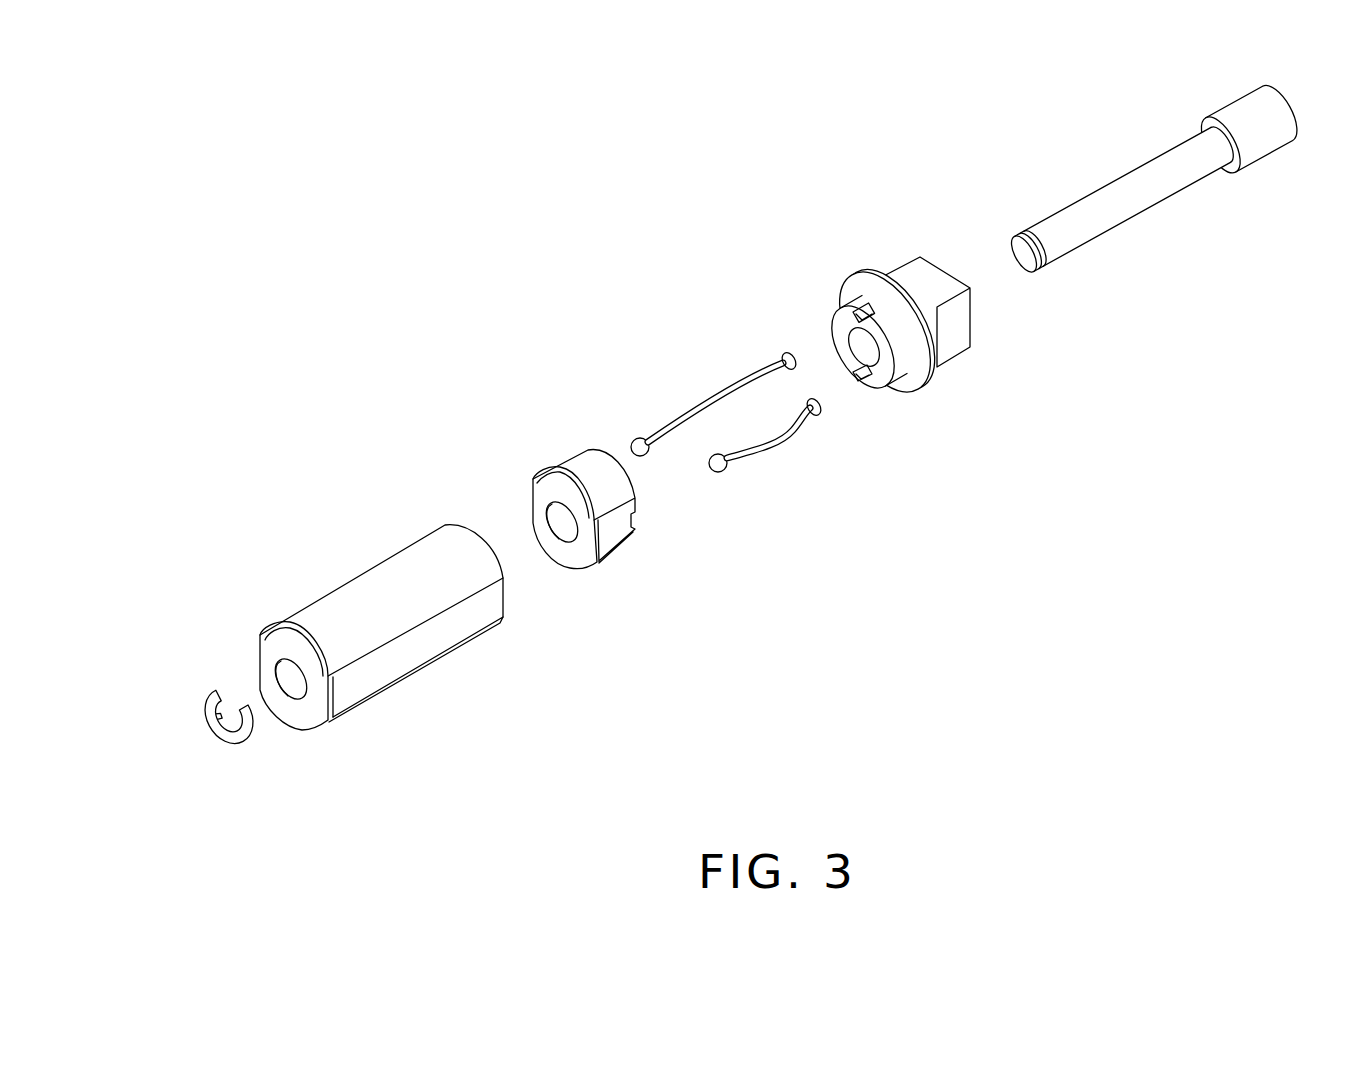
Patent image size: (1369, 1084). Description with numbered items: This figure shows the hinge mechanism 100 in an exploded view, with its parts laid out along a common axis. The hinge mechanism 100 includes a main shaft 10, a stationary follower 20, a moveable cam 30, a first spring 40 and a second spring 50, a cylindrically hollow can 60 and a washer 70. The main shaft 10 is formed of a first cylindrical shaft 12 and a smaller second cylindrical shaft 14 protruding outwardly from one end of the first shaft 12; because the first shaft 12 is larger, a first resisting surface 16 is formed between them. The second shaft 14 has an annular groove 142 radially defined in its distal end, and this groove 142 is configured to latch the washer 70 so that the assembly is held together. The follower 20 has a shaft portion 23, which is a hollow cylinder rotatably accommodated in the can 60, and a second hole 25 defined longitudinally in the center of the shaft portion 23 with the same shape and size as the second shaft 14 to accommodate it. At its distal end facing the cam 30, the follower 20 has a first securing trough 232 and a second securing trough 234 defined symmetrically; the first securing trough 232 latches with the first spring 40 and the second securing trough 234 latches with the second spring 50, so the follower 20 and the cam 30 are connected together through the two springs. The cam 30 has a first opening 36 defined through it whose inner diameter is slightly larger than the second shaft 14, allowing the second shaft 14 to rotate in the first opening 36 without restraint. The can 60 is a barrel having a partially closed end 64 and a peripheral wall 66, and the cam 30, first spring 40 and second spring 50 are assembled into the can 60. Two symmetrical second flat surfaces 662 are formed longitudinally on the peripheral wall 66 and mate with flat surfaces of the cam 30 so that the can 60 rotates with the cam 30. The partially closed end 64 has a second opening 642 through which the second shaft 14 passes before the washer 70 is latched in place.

The hinge mechanism 100 is at (496, 152).
The main shaft 10 is at (1112, 150).
The first cylindrical shaft 12 is at (1262, 138).
The second cylindrical shaft 14 is at (1132, 203).
The annular groove 142 is at (1053, 260).
The first resisting surface 16 is at (1237, 168).
The follower 20 is at (851, 260).
The shaft portion 23 is at (903, 365).
The first securing trough 232 is at (850, 312).
The second securing trough 234 is at (866, 386).
The second hole 25 is at (866, 348).
The cam 30 is at (549, 438).
The first opening 36 is at (567, 528).
The first spring 40 is at (726, 384).
The second spring 50 is at (776, 446).
The cylindrically hollow can 60 is at (336, 550).
The partially closed end 64 is at (318, 711).
The second opening 642 is at (290, 680).
The peripheral wall 66 is at (422, 570).
The second flat surfaces 662 is at (410, 655).
The washer 70 is at (238, 745).